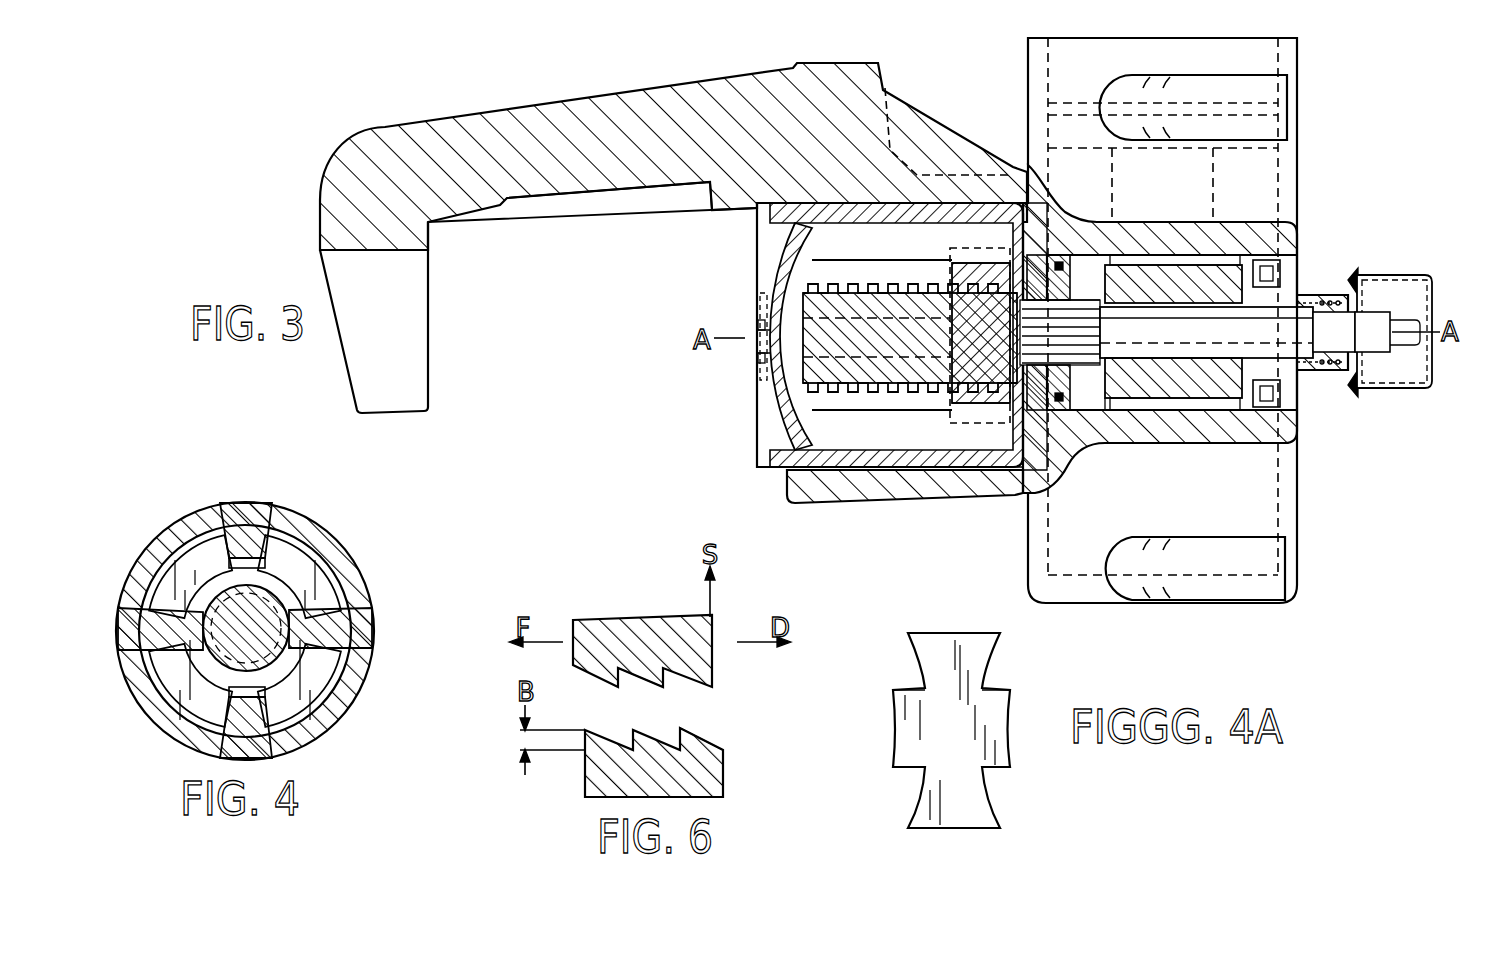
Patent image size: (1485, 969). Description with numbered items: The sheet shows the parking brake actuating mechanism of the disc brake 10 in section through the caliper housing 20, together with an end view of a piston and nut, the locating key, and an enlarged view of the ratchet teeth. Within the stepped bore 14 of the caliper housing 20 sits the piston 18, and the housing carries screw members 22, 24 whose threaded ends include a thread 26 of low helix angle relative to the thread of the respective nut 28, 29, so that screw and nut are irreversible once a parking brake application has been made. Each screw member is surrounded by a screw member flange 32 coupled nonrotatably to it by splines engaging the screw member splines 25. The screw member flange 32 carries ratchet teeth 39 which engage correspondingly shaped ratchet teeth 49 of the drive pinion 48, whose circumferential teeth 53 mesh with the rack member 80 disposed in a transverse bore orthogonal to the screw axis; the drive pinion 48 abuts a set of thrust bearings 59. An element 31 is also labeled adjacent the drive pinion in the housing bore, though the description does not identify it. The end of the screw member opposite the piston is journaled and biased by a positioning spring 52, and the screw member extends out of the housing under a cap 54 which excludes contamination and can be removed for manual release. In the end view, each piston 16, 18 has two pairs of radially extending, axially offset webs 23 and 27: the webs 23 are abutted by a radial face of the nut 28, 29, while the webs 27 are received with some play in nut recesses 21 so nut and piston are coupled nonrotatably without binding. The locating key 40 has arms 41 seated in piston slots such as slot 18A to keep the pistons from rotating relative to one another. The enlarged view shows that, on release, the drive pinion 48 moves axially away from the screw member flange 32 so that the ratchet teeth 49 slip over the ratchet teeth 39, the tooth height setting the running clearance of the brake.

In FIG. 3, the disc brake 10 is at (538, 92).
In FIG. 3, the bore 14 is at (950, 472).
In FIG. 4, the piston 16 is at (288, 631).
In FIG. 3, the piston 18 is at (875, 470).
In FIG. 4, the piston 18 is at (375, 665).
In FIG. 3, the piston slot 18A is at (757, 362).
In FIG. 3, the caliper housing 20 is at (1295, 230).
In FIG. 4, the nut recess 21 is at (300, 545).
In FIG. 3, the screw member 22 is at (807, 342).
In FIG. 4, the screw member 22 is at (324, 597).
In FIG. 3, the web 23 is at (928, 294).
In FIG. 4, the web 23 is at (178, 630).
In FIG. 4, the screw member 24 is at (280, 595).
In FIG. 3, the screw member spline 25 is at (1078, 300).
In FIG. 3, the thread 26 is at (850, 293).
In FIG. 3, the web 27 is at (978, 262).
In FIG. 4, the web 27 is at (270, 520).
In FIG. 3, the nut 28 is at (955, 385).
In FIG. 4, the nut 28 is at (219, 596).
In FIG. 4, the nut 29 is at (200, 570).
In FIG. 3, the retaining nut 31 is at (1060, 410).
In FIG. 3, the screw member flange 32 is at (1170, 445).
In FIG. 6, the screw member flange 32 is at (725, 765).
In FIG. 6, the ratchet teeth 39 is at (703, 738).
In FIG. 3, the locating key 40 is at (760, 298).
In FIG. 4A, the locating key 40 is at (980, 652).
In FIG. 3, the arm 41 is at (758, 325).
In FIG. 4A, the arm 41 is at (992, 740).
In FIG. 6, the drive pinion 48 is at (712, 620).
In FIG. 6, the ratchet teeth 49 is at (710, 682).
In FIG. 3, the positioning spring 52 is at (1330, 375).
In FIG. 3, the circumferential teeth 53 is at (1220, 410).
In FIG. 3, the cap 54 is at (1378, 276).
In FIG. 3, the thrust bearings 59 is at (1278, 268).
In FIG. 3, the rack member 80 is at (1213, 200).